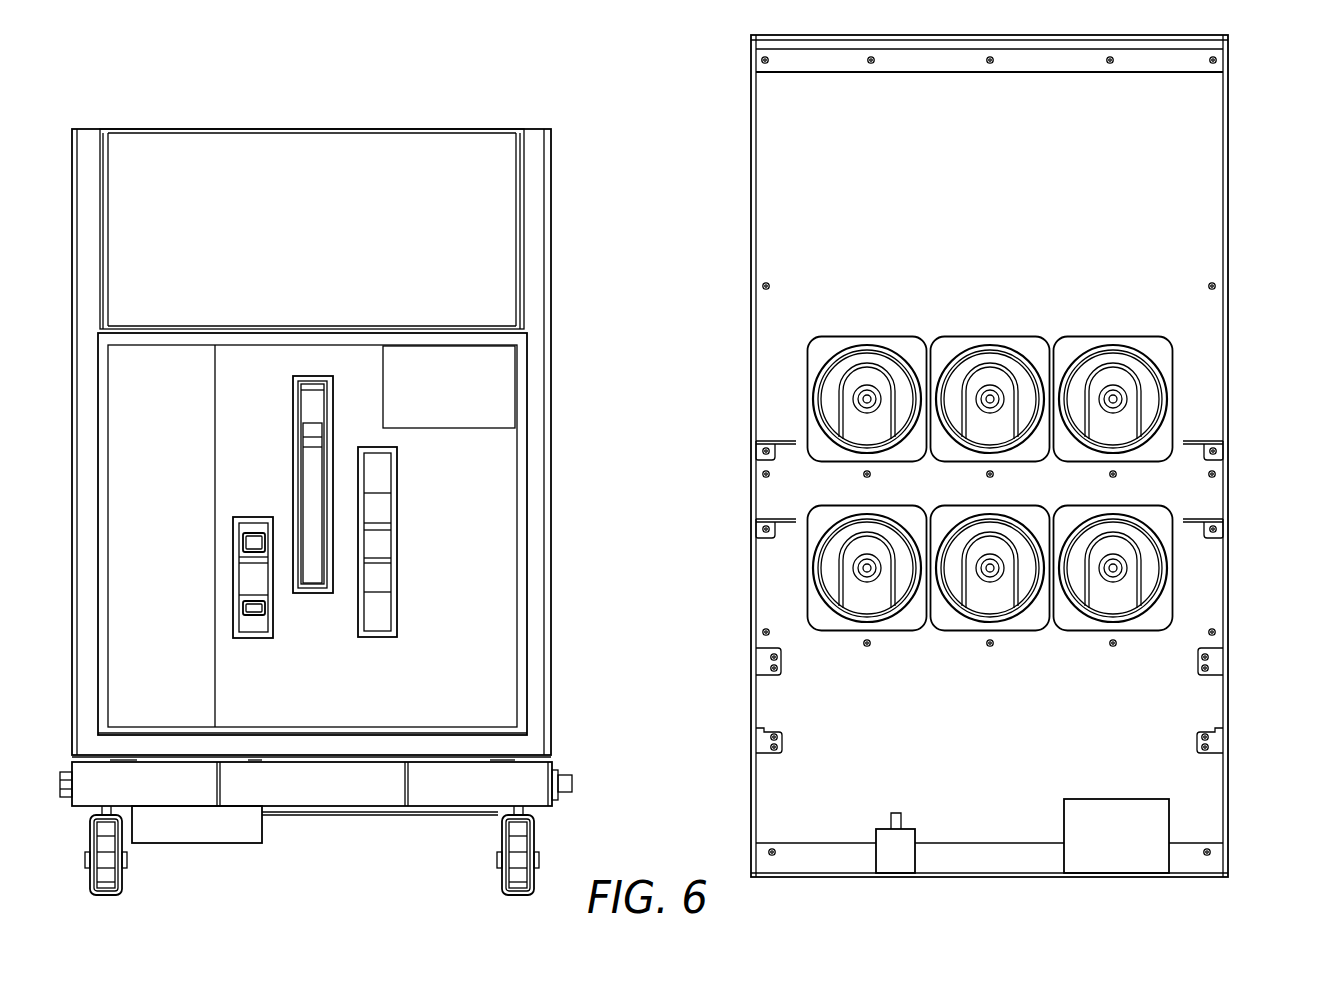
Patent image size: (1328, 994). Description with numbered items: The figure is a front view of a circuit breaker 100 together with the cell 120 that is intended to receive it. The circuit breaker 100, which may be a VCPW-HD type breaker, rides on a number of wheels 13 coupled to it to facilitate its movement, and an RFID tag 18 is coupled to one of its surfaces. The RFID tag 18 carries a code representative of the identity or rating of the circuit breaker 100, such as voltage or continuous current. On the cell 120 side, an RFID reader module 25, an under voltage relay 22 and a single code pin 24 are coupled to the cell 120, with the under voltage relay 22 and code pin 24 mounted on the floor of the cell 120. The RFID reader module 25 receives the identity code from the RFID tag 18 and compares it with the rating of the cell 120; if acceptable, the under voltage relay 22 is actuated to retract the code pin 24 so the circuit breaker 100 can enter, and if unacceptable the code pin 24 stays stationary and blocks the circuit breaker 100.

The circuit breaker 100 is at (435, 158).
The wheels 13 is at (106, 844).
The RFID tag 18 is at (218, 830).
The cell 120 is at (1193, 105).
The under voltage relay (UVR) 22 is at (903, 858).
The code pin 24 is at (890, 818).
The RFID reader module 25 is at (1112, 815).